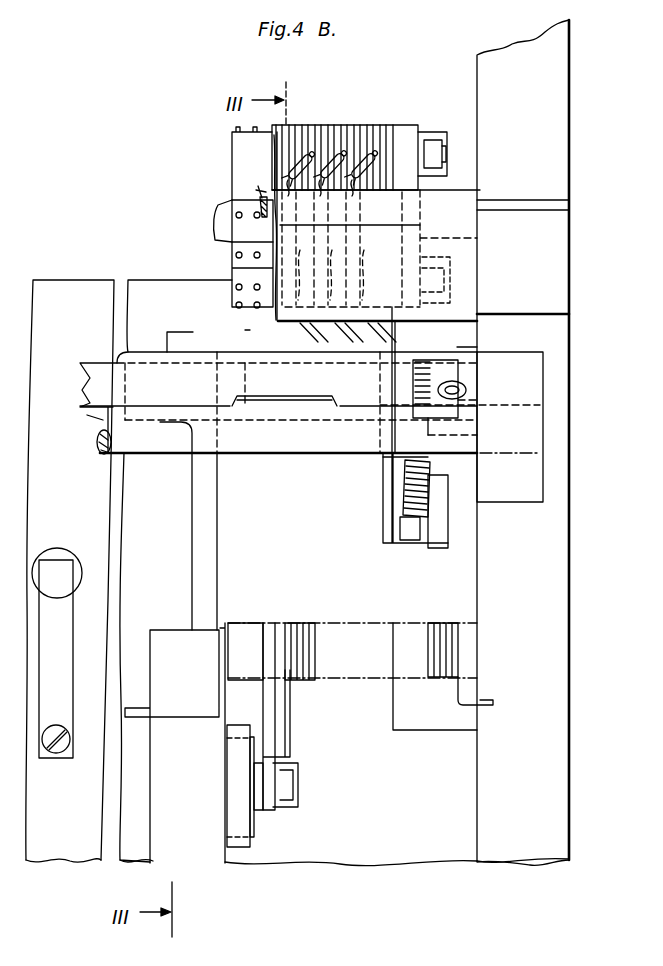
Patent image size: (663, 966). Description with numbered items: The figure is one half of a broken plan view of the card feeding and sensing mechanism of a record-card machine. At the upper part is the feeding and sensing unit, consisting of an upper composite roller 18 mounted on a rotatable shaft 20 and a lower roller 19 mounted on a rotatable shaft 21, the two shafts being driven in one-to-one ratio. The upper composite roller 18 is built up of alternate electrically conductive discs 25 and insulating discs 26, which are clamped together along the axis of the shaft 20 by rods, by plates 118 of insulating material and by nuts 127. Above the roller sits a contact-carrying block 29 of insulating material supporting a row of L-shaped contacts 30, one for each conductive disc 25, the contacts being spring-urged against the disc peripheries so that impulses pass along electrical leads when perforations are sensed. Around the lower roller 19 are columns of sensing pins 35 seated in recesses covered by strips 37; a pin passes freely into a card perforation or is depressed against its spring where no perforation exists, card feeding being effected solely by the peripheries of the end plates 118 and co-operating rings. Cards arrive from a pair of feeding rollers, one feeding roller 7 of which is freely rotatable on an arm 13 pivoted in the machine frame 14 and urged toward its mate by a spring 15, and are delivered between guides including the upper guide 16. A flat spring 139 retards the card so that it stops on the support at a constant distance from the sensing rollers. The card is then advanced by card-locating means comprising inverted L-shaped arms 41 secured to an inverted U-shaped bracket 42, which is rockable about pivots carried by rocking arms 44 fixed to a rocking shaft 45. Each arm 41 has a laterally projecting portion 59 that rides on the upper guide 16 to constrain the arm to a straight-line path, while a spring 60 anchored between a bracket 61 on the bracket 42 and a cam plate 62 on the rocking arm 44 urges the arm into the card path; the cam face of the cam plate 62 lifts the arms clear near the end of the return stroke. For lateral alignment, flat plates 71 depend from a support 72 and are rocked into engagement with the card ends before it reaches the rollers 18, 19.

The feeding roller 7 is at (238, 757).
The arm 13 is at (270, 727).
The machine frame 14 is at (536, 797).
The spring 15 is at (291, 625).
The guide 16 is at (230, 853).
The upper composite roller 18 is at (402, 112).
The lower roller 19 is at (223, 152).
The rotatable shaft 20 is at (260, 190).
The rotatable shaft 21 is at (265, 199).
The electrically conductive disc 25 is at (297, 125).
The insulating disc 26 is at (307, 127).
The contact-carrying block 29 is at (463, 220).
The L-shaped contact 30 is at (357, 195).
The sensing pin 35 is at (232, 280).
The strip 37 is at (233, 212).
The inverted L-shaped arm 41 is at (197, 509).
The inverted U-shaped bracket 42 is at (303, 390).
The rocking arm 44 is at (466, 465).
The rocking shaft 45 is at (312, 443).
The laterally projecting portion 59 is at (167, 710).
The spring 60 is at (403, 505).
The bracket 61 is at (458, 362).
The cam plate 62 is at (448, 533).
The flat plate 71 is at (392, 538).
The support 72 is at (388, 483).
The plate 118 is at (440, 128).
The nut 127 is at (441, 138).
The flat spring 139 is at (49, 560).